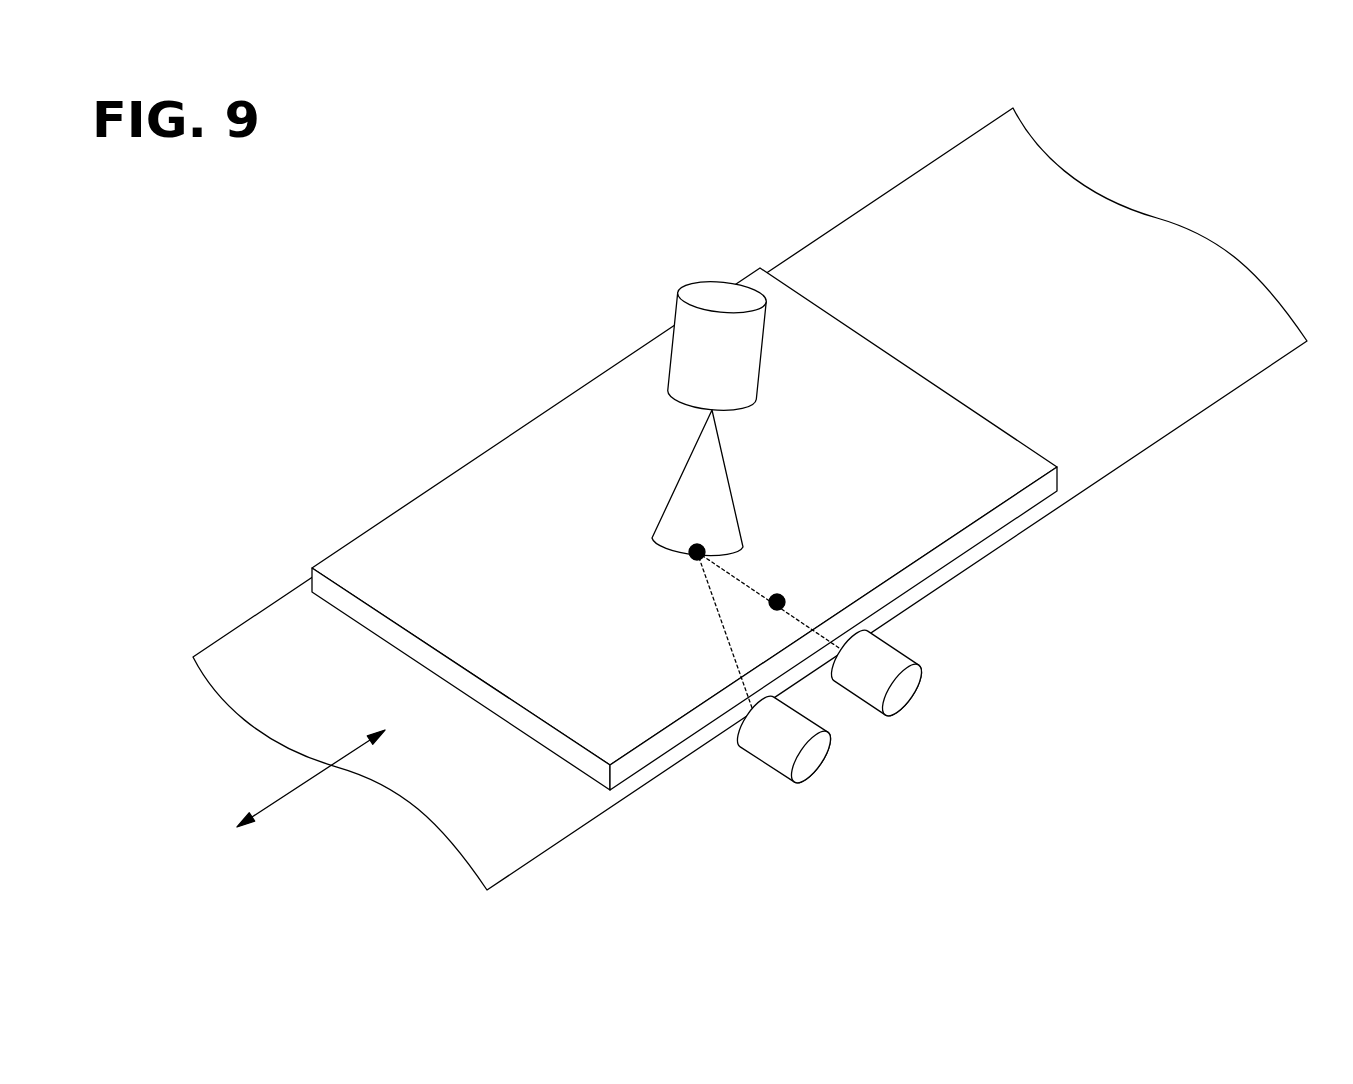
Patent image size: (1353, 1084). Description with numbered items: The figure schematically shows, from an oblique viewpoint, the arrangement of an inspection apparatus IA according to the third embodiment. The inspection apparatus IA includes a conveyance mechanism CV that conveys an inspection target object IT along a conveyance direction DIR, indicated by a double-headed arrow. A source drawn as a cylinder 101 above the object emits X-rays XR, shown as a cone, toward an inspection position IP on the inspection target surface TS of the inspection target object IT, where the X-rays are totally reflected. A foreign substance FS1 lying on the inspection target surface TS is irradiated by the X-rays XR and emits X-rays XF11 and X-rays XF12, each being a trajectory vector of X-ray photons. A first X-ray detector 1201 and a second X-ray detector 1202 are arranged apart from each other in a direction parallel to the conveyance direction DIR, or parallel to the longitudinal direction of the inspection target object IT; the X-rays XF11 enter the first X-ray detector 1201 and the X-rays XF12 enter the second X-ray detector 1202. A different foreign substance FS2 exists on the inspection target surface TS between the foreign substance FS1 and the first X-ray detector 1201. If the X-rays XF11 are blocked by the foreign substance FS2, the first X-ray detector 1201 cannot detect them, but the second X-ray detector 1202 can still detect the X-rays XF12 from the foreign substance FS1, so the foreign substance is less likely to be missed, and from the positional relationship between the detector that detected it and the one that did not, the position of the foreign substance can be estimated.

The X-ray source 101 is at (685, 315).
The inspection apparatus IA is at (460, 318).
The inspection position IP is at (458, 443).
The inspection target surface TS is at (485, 480).
The inspection target object IT is at (418, 497).
The X-rays XR is at (690, 497).
The foreign substance FS1 is at (688, 560).
The foreign substance FS2 is at (787, 597).
The X-rays XF11 is at (735, 575).
The X-rays XF12 is at (722, 628).
The first X-ray detector 1201 is at (900, 697).
The second X-ray detector 1202 is at (813, 760).
The conveyance direction DIR is at (294, 797).
The conveyance mechanism CV is at (532, 853).